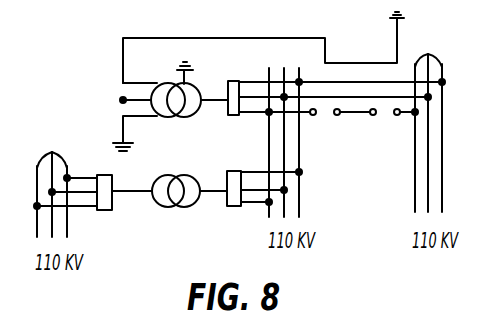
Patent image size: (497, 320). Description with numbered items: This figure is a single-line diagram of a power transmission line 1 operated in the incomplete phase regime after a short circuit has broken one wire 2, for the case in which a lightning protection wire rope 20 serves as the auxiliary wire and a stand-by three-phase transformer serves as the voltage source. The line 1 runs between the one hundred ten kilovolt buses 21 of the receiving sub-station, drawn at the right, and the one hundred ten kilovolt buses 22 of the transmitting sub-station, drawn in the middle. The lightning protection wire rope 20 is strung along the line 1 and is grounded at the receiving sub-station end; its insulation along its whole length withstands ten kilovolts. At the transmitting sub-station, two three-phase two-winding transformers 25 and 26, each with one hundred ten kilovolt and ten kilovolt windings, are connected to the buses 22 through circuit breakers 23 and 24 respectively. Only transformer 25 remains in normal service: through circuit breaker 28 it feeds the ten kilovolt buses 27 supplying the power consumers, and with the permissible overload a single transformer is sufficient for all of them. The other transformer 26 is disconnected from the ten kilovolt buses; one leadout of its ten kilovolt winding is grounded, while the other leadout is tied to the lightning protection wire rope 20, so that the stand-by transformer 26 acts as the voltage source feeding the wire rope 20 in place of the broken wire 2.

The power transmission line 1 is at (322, 97).
The wire 2 is at (328, 127).
The lightning protection wire rope 20 is at (379, 62).
The buses of the receiving sub-station 21 is at (430, 123).
The buses of the transmitting sub-station 22 is at (284, 199).
The circuit breaker 23 is at (233, 206).
The circuit breaker 24 is at (231, 81).
The three-phase two-winding transformer 25 is at (170, 208).
The three-phase two-winding transformer 26 is at (187, 118).
The buses 27 is at (65, 183).
The circuit breaker 28 is at (106, 210).